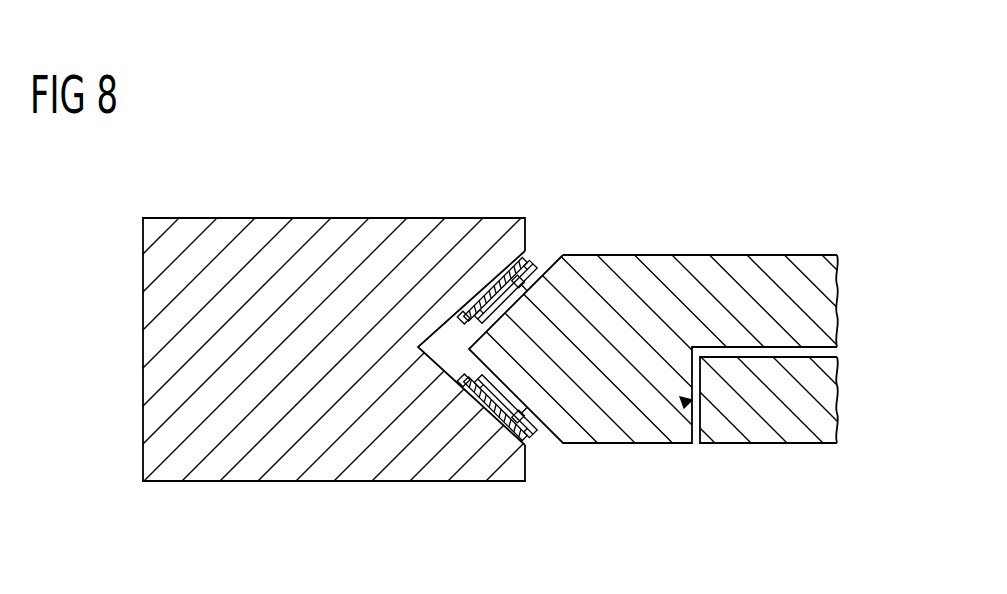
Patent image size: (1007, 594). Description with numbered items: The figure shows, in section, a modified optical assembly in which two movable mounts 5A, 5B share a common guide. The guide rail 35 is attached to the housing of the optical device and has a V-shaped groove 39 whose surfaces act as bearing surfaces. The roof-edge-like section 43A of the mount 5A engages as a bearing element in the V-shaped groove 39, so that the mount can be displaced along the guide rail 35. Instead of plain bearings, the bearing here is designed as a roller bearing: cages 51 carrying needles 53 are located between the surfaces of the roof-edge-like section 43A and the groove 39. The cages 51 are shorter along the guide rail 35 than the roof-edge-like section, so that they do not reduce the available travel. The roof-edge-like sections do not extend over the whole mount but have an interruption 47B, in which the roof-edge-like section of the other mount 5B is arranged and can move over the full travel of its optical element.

The guide rail 35 is at (307, 232).
The V-shaped groove 39 is at (435, 345).
The needles 53 is at (538, 262).
The roof-edge-like section 43A is at (553, 262).
The cage 51 is at (533, 287).
The mount 5A is at (737, 265).
The mount 5B is at (750, 430).
The interruption 47B is at (686, 402).